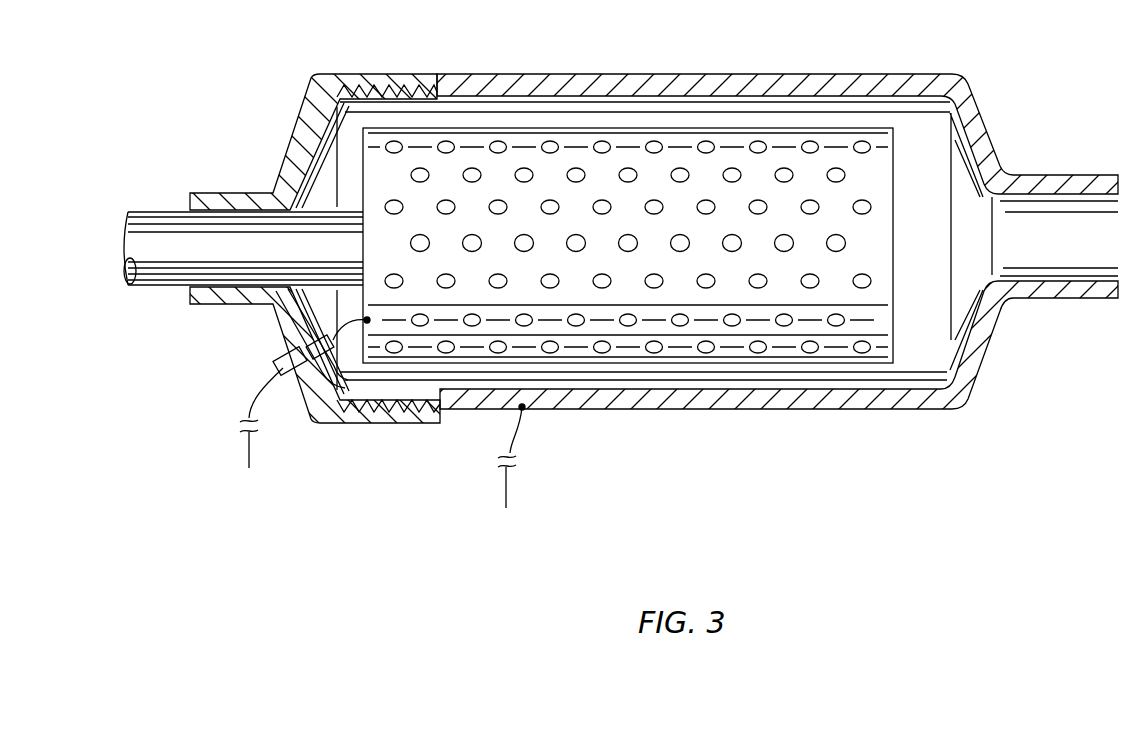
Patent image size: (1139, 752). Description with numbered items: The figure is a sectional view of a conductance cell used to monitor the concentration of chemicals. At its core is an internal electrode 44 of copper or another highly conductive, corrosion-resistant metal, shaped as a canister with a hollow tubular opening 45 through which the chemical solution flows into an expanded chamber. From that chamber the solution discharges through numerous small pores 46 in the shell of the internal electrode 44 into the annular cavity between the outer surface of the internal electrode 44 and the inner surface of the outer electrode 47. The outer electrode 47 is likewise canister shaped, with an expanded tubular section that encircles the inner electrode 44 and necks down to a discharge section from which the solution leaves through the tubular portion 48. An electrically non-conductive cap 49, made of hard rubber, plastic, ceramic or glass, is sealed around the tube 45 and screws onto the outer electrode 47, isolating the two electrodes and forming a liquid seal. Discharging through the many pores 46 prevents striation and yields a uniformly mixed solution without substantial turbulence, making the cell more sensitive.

The internal electrode 44 is at (884, 243).
The hollow tubular opening 45 is at (167, 232).
The pores 46 is at (838, 167).
The outer electrode 47 is at (746, 397).
The tubular portion 48 is at (1063, 289).
The electrically non-conductive cap 49 is at (403, 72).